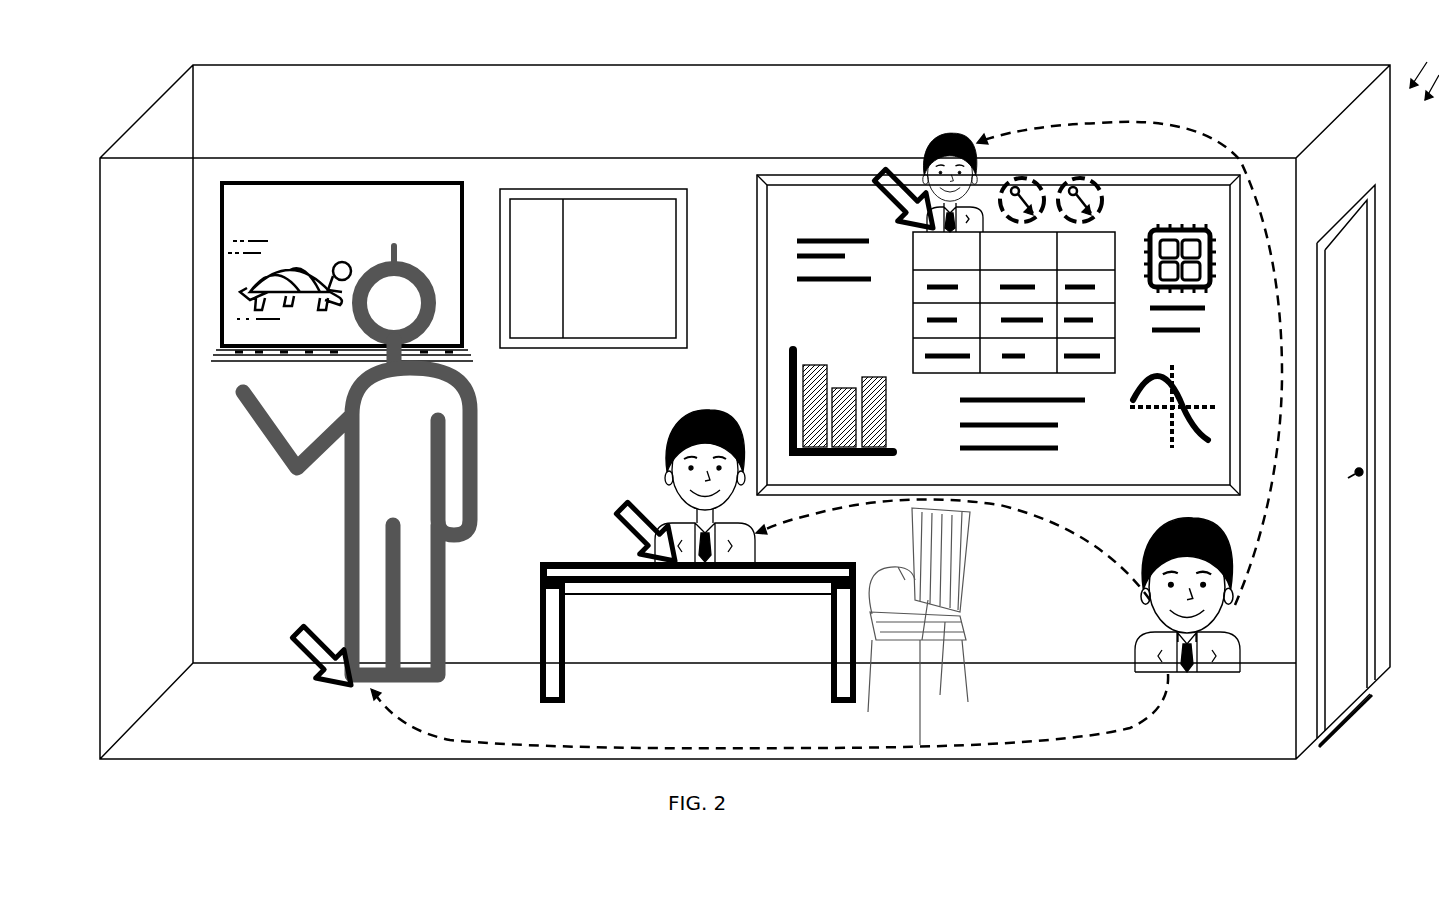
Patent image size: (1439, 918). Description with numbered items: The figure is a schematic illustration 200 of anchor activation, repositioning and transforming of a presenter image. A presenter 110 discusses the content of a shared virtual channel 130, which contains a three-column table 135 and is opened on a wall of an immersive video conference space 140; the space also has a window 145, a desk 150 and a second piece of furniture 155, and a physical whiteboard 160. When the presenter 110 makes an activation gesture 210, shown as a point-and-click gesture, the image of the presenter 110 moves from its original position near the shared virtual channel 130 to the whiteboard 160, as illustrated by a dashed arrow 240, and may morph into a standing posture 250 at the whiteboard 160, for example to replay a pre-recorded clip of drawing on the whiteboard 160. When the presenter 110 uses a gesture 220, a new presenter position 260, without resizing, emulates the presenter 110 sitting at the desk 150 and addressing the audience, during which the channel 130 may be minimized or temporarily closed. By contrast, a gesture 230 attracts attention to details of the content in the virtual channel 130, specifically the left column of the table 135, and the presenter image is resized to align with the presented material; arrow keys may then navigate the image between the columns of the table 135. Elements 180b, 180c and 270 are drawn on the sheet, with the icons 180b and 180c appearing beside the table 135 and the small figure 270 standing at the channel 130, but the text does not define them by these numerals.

The presenter 110 is at (1107, 643).
The shared virtual channel 130 is at (1183, 175).
The three-column table 135 is at (910, 243).
The immersive video conference space 140 is at (143, 116).
The window 145 is at (627, 189).
The desk 150 is at (598, 560).
The furniture 155 is at (958, 612).
The whiteboard 160 is at (373, 182).
The interactive icon 180b is at (1023, 172).
The interactive icon 180c is at (1083, 172).
The schematic illustration 200 is at (1424, 69).
The activation gesture 210 is at (298, 632).
The gesture 220 is at (628, 506).
The gesture 230 is at (895, 171).
The dashed arrow 240 is at (705, 746).
The standing posture 250 is at (340, 560).
The presenter position 260 is at (668, 430).
The person at board 270 is at (940, 132).